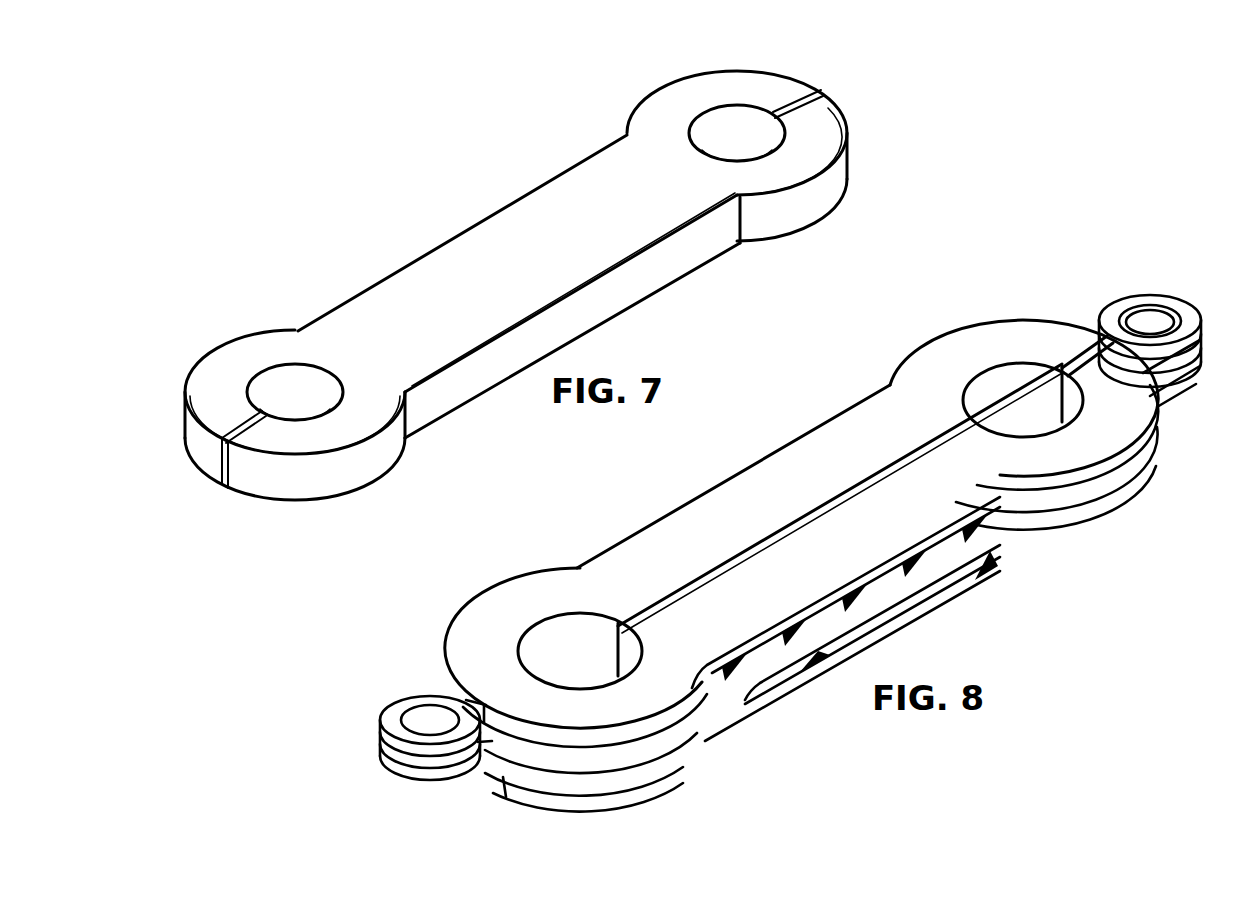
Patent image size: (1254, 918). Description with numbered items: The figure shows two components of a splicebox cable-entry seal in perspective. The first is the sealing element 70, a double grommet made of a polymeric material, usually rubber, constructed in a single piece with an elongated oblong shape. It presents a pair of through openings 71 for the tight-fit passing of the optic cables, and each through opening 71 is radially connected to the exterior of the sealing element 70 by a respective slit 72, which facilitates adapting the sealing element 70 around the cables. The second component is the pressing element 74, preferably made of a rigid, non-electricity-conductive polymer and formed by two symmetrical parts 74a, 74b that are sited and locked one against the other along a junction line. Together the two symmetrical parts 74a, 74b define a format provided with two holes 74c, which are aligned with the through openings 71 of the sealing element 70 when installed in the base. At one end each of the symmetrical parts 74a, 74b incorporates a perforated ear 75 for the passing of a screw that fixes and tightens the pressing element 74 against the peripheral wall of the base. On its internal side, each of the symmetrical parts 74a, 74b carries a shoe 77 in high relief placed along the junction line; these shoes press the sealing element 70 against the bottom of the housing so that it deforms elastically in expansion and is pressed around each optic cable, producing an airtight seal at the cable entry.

In FIG. 7, the sealing element 70 is at (480, 214).
In FIG. 7, the through opening 71 is at (265, 390).
In FIG. 7, the slit 72 is at (243, 418).
In FIG. 8, the pressing element 74 is at (722, 472).
In FIG. 8, the symmetrical part 74a is at (705, 527).
In FIG. 8, the symmetrical part 74b is at (822, 560).
In FIG. 8, the hole 74c is at (587, 636).
In FIG. 8, the perforated ear 75 is at (403, 781).
In FIG. 8, the shoe 77 is at (981, 320).